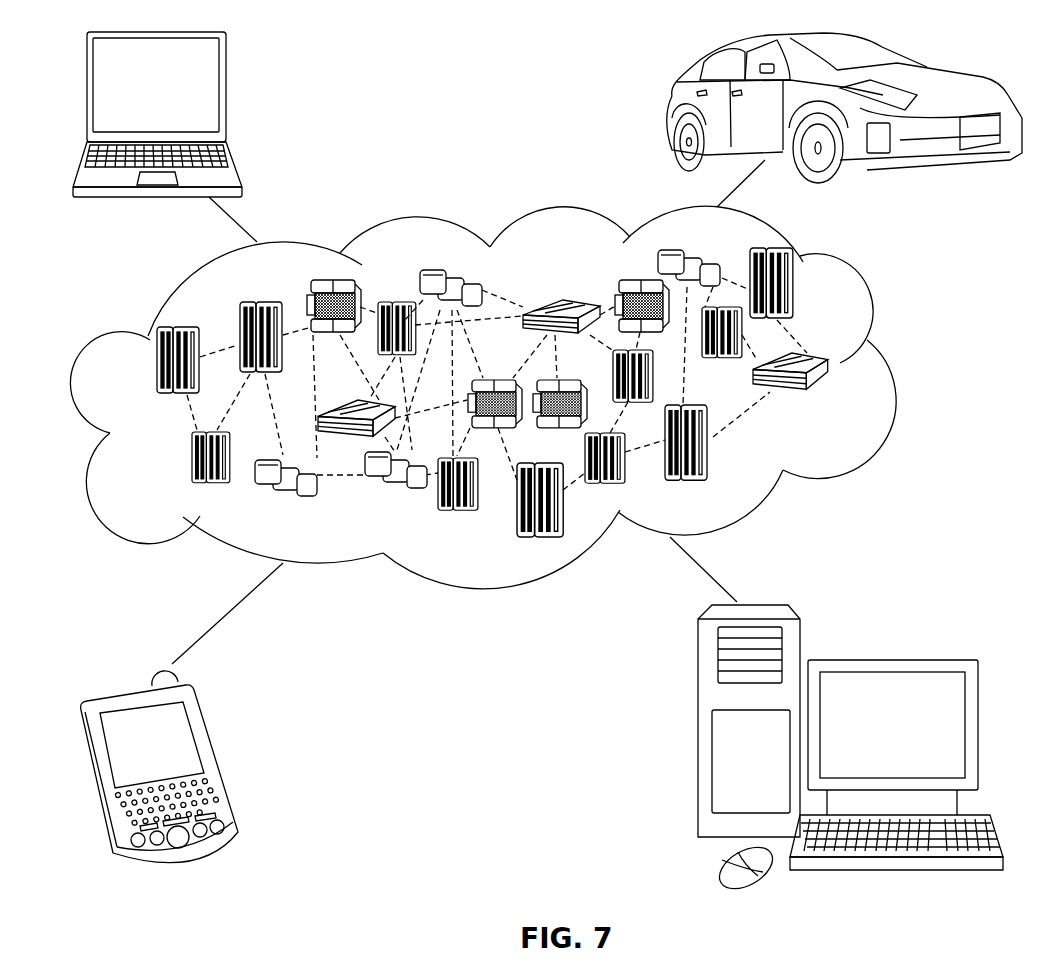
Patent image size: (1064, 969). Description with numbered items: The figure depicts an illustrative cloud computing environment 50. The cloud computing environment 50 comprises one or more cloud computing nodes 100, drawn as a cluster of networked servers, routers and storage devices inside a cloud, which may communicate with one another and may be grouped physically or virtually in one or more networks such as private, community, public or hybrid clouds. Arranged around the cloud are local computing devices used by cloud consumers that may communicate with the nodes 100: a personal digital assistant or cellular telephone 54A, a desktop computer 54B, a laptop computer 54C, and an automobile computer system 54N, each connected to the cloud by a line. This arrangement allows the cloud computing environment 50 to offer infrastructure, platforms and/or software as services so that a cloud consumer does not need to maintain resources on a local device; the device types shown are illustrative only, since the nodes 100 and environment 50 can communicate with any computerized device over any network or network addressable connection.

The laptop computer 54C is at (230, 92).
The automobile computer system 54N is at (668, 110).
The cloud computing environment 50 is at (892, 370).
The cloud computing nodes 100 is at (831, 400).
The personal digital assistant or cellular telephone 54A is at (217, 758).
The desktop computer 54B is at (890, 662).